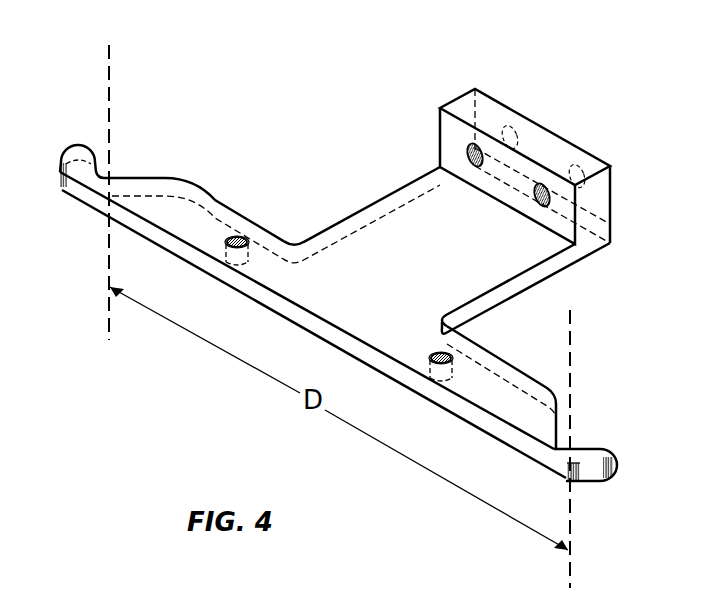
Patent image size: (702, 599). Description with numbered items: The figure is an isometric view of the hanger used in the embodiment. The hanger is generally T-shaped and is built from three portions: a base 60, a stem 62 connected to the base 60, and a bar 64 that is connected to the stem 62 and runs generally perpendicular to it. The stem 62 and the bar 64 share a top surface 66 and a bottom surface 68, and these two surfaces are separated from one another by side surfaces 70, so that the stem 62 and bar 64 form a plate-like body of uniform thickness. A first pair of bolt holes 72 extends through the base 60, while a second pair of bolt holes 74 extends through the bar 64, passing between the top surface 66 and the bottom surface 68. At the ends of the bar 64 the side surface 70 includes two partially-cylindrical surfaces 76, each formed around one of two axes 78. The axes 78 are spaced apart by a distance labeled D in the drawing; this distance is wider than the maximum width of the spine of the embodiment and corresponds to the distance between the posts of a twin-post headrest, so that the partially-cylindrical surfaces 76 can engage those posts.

The base 60 is at (517, 167).
The stem 62 is at (335, 322).
The bar 64 is at (328, 308).
The top surface 66 is at (498, 255).
The bottom surface 68 is at (380, 322).
The side surfaces 70 is at (243, 233).
The first pair of bolt holes 72 is at (529, 200).
The second pair of bolt holes 74 is at (250, 227).
The partially-cylindrical surfaces 76 is at (100, 174).
The axes 78 is at (108, 80).